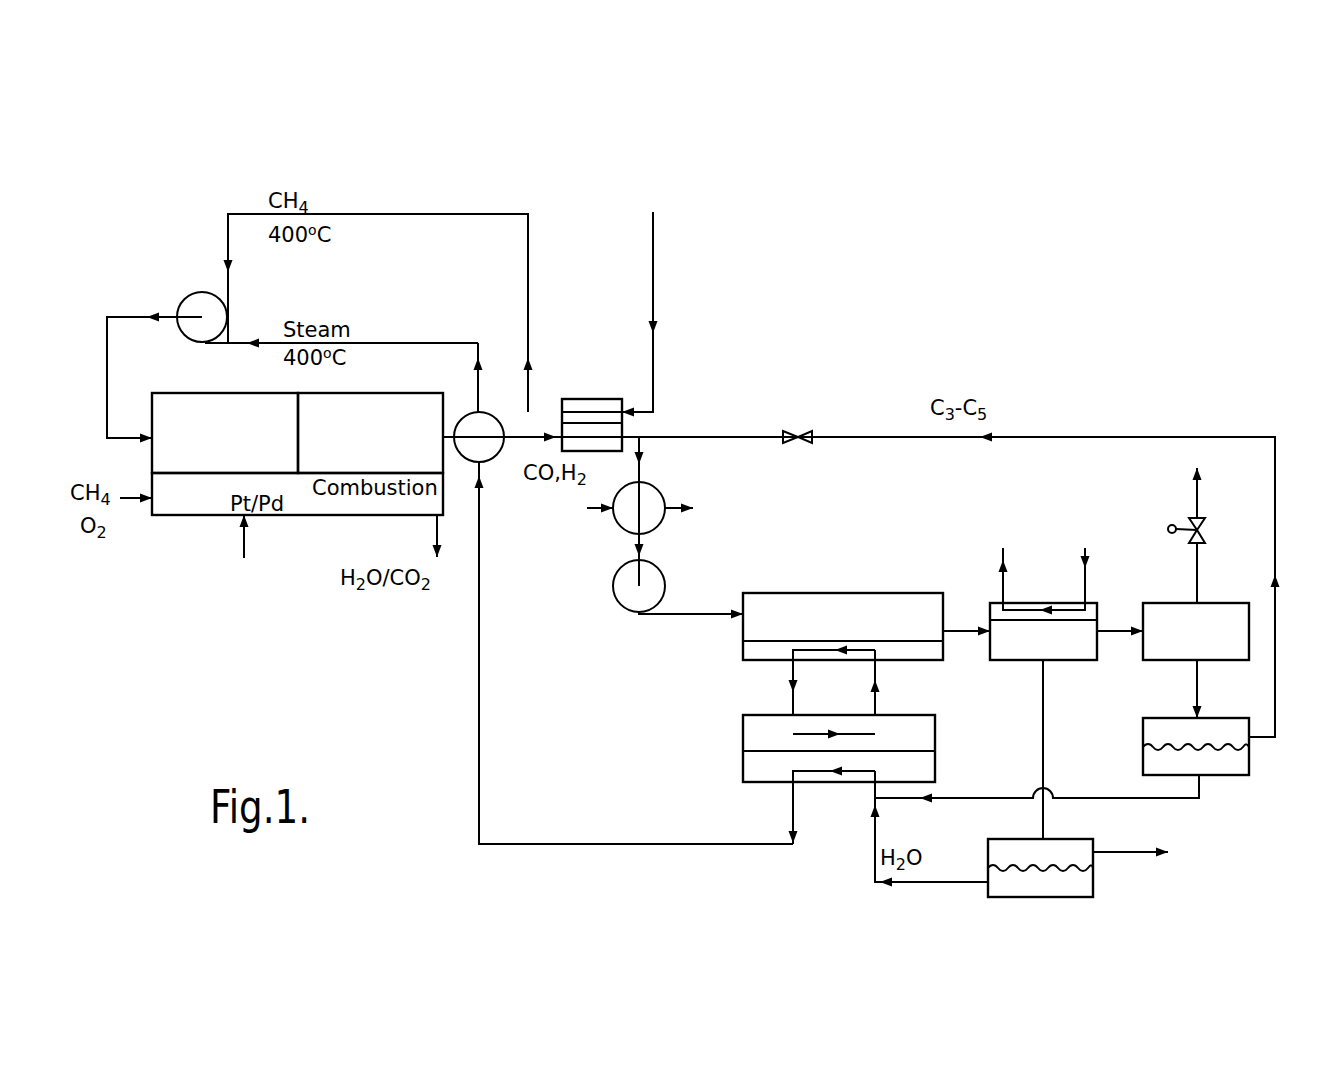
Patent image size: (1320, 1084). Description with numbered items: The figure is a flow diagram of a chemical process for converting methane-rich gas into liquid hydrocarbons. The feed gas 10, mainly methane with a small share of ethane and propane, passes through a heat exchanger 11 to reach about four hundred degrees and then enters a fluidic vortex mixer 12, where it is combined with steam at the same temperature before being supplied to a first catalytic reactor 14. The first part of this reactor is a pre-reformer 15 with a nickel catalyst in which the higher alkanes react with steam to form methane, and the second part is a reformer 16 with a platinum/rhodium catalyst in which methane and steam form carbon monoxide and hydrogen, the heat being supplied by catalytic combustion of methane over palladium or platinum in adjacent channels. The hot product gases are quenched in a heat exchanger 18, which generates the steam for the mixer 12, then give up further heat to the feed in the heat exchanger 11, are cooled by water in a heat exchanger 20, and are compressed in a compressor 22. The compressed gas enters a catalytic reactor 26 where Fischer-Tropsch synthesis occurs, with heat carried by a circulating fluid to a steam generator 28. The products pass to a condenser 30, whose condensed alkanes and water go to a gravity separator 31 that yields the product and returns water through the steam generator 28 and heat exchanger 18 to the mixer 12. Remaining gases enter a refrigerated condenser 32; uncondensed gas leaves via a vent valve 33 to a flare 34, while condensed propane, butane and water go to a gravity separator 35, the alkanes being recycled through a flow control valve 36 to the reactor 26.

The feed gas 10 is at (653, 236).
The heat exchanger 11 is at (584, 399).
The fluidic vortex mixer 12 is at (190, 294).
The first catalytic reactor 14 is at (245, 550).
The pre-reformer 15 is at (190, 393).
The reformer 16 is at (376, 393).
The heat exchanger 18 is at (496, 413).
The heat exchanger 20 is at (656, 488).
The compressor 22 is at (656, 566).
The catalytic reactor 26 is at (855, 591).
The steam generator 28 is at (924, 715).
The condenser 30 is at (1011, 662).
The gravity separator 31 is at (1068, 838).
The refrigerated condenser 32 is at (1150, 662).
The pressure-releasing vent valve 33 is at (1185, 535).
The flare 34 is at (1192, 471).
The gravity separator 35 is at (1143, 729).
The flow control valve 36 is at (811, 440).